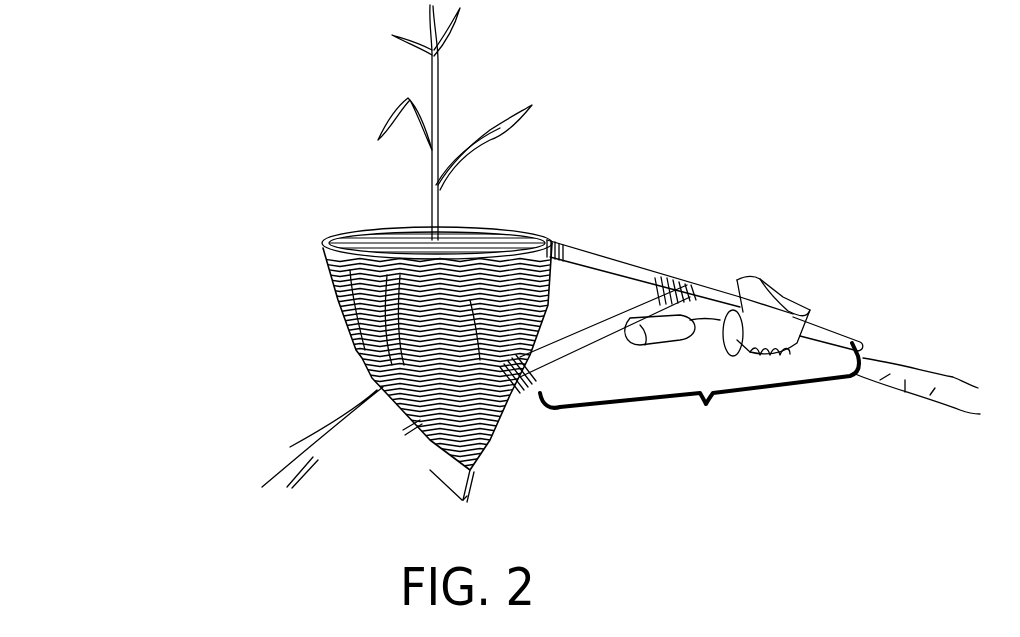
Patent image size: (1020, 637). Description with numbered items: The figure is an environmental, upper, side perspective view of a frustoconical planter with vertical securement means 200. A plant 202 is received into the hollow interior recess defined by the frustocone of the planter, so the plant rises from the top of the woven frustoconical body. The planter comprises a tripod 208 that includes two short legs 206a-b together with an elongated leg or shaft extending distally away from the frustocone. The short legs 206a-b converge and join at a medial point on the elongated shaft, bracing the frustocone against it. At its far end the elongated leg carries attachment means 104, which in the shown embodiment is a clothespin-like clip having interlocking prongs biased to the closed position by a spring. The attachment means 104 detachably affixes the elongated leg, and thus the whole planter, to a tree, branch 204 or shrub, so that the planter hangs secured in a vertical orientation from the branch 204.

The frustoconical planter with vertical securement means 200 is at (100, 85).
The plant 202 is at (430, 208).
The short legs 206a-b is at (535, 380).
The attachment means 104 is at (783, 340).
The branch 204 is at (813, 352).
The tripod 208 is at (706, 402).